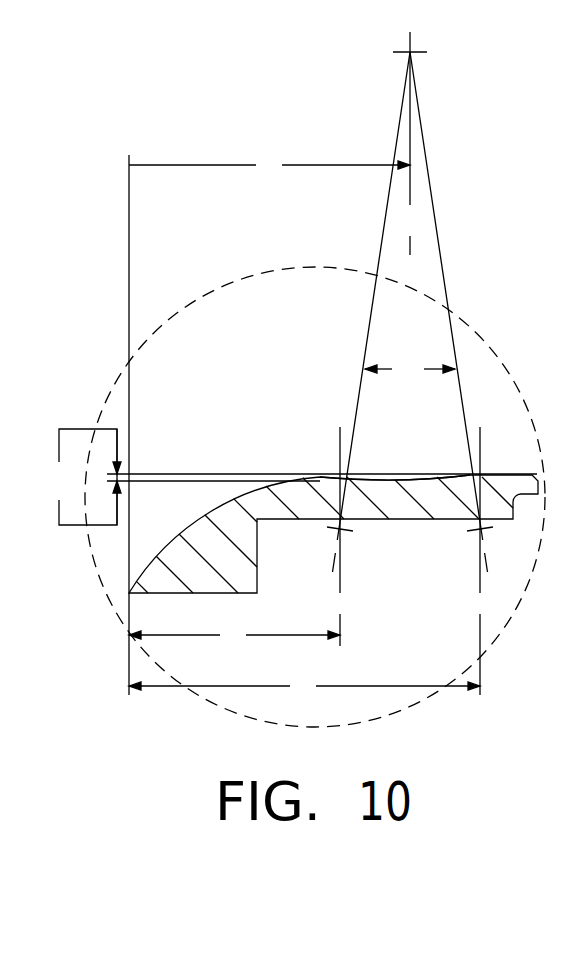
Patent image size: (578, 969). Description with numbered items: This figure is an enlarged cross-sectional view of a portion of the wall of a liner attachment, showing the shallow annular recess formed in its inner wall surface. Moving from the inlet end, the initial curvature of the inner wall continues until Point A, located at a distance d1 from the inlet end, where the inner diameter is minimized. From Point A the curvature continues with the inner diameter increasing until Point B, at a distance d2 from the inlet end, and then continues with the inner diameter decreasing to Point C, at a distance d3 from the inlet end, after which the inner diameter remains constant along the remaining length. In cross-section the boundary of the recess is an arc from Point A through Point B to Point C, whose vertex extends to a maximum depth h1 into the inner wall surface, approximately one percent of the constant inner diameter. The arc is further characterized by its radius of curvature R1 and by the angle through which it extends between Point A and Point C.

The distance from inlet end to Point A d1 is at (234, 637).
The distance from inlet end to Point B d2 is at (269, 167).
The distance from inlet end to Point C d3 is at (304, 688).
The maximum depth of annular recess h1 is at (292, 477).
The radius of curvature of the arc R1 is at (410, 487).
The Point A is at (340, 536).
The Point B is at (410, 143).
The Point C is at (480, 561).